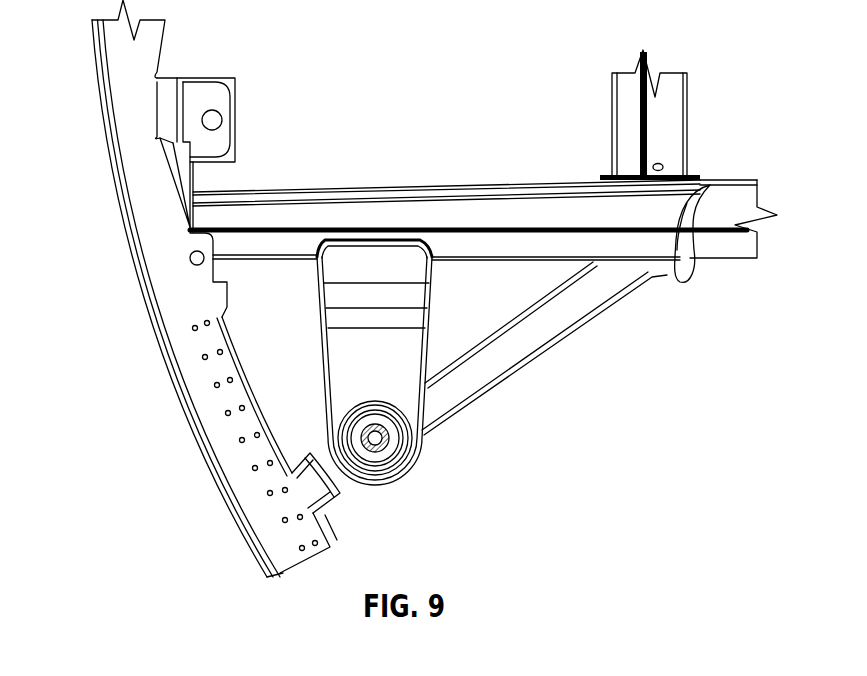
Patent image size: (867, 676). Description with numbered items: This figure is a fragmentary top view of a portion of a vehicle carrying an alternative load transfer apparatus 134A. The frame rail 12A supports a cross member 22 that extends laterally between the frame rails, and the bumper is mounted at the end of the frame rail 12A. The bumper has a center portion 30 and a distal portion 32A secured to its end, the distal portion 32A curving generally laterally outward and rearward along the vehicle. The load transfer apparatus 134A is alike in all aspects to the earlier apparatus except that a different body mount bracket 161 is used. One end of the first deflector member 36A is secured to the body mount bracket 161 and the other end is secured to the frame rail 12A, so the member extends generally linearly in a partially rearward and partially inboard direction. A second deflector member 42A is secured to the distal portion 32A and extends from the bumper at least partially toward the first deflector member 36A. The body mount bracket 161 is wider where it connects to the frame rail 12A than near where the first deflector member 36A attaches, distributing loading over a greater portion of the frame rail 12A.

The center portion 30 is at (120, 145).
The frame rail 12A is at (492, 193).
The cross member 22 is at (667, 135).
The body mount bracket 161 is at (333, 363).
The first deflector member 36A is at (555, 312).
The load transfer apparatus 134A is at (490, 405).
The distal portion 32A is at (210, 470).
The second deflector member 42A is at (327, 500).